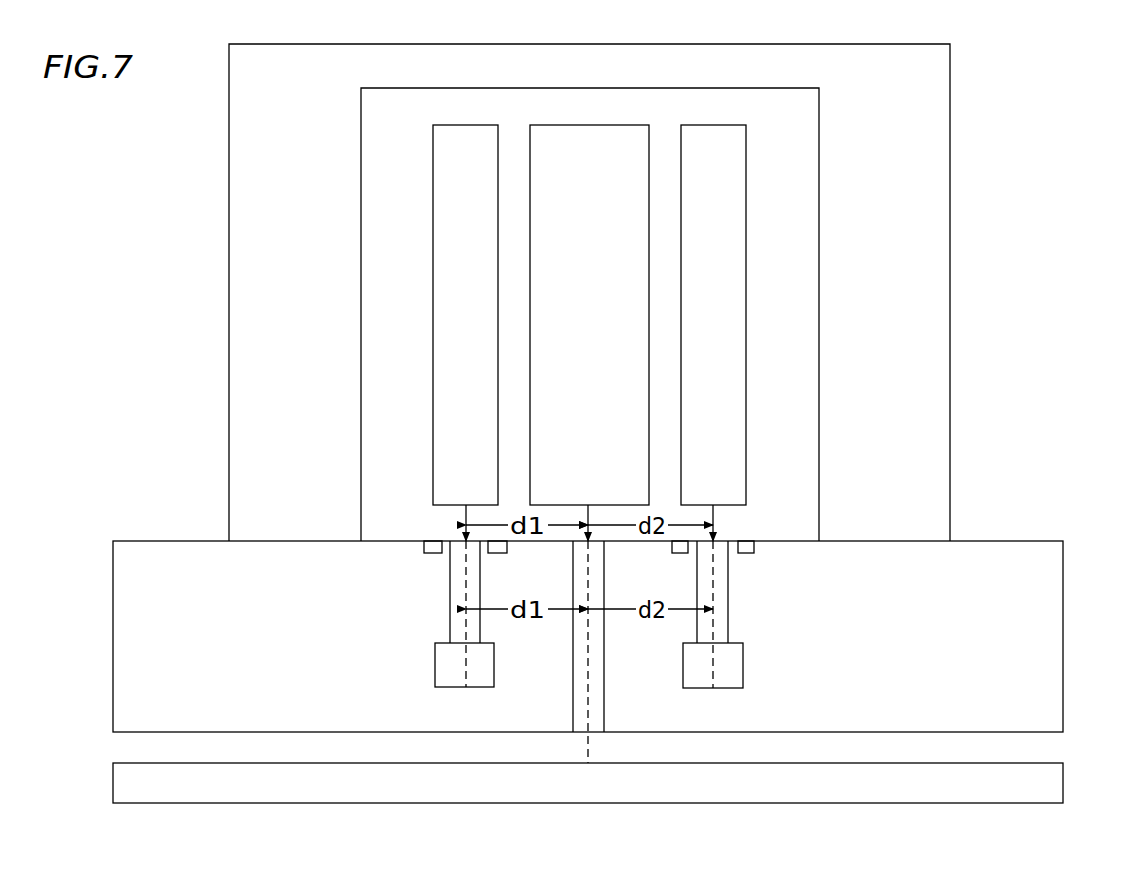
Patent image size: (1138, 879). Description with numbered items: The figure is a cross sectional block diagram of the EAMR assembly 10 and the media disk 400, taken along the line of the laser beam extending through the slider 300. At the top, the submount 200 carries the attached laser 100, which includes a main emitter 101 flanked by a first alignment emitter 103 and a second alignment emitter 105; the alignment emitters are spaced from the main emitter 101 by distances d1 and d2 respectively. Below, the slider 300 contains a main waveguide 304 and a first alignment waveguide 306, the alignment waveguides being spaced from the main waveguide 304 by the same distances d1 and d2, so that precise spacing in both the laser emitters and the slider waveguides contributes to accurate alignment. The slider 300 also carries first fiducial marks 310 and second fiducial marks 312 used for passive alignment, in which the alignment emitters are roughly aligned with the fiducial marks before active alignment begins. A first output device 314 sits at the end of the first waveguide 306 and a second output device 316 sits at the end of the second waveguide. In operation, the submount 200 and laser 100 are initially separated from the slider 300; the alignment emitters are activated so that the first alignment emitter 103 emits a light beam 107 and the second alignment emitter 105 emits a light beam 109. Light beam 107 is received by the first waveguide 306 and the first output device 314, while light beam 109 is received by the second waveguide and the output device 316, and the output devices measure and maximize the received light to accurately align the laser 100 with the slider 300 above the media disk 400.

The EAMR assembly 10 is at (994, 75).
The laser 100 is at (805, 146).
The main emitter 101 is at (608, 275).
The first alignment emitter 103 is at (485, 275).
The second alignment emitter 105 is at (733, 275).
The light beam 107 is at (466, 517).
The light beam 109 is at (713, 510).
The submount 200 is at (905, 108).
The slider 300 is at (1045, 595).
The main waveguide 304 is at (604, 712).
The first alignment waveguide 306 is at (450, 627).
The first fiducial marks 310 is at (432, 553).
The second fiducial marks 312 is at (681, 553).
The first output device 314 is at (435, 665).
The second output device 316 is at (743, 665).
The media disk 400 is at (692, 796).